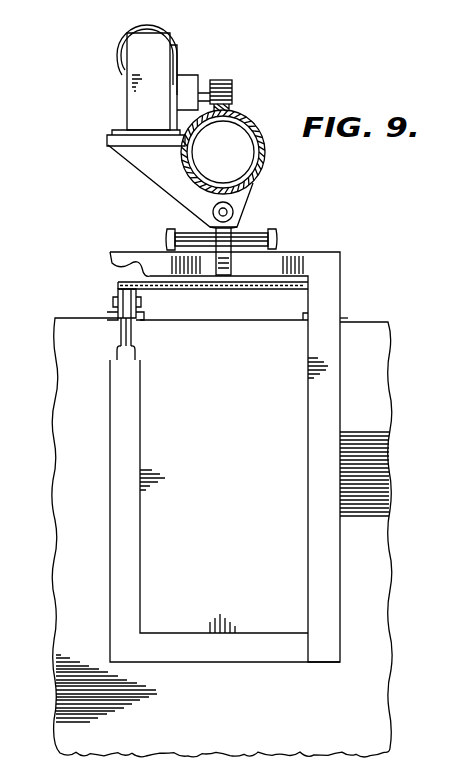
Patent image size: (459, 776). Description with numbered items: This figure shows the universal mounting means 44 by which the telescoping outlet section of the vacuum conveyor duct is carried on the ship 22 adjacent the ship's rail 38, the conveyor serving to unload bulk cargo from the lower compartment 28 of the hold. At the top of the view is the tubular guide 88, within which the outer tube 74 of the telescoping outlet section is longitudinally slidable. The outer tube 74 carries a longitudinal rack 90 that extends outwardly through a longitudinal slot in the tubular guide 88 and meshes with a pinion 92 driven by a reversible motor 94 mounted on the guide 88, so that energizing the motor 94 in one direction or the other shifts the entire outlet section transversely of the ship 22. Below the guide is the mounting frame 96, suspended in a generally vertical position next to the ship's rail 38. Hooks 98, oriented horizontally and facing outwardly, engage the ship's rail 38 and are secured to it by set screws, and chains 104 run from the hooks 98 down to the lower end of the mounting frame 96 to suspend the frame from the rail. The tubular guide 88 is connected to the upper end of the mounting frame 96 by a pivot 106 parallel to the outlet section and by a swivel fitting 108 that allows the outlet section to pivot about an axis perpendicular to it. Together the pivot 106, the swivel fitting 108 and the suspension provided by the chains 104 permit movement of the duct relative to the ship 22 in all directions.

The cargo vessel or ship 22 is at (77, 731).
The lower compartment 28 is at (343, 318).
The ship's rail 38 is at (375, 324).
The universal mounting means 44 is at (356, 230).
The outer tube 74 is at (258, 130).
The tubular guide 88 is at (265, 158).
The longitudinal rack 90 is at (232, 111).
The pinion 92 is at (222, 80).
The reversible motor 94 is at (177, 52).
The mounting frame 96 is at (117, 552).
The hooks 98 is at (142, 314).
The chains 104 is at (136, 352).
The pivot 106 is at (231, 212).
The swivel fitting 108 is at (290, 244).